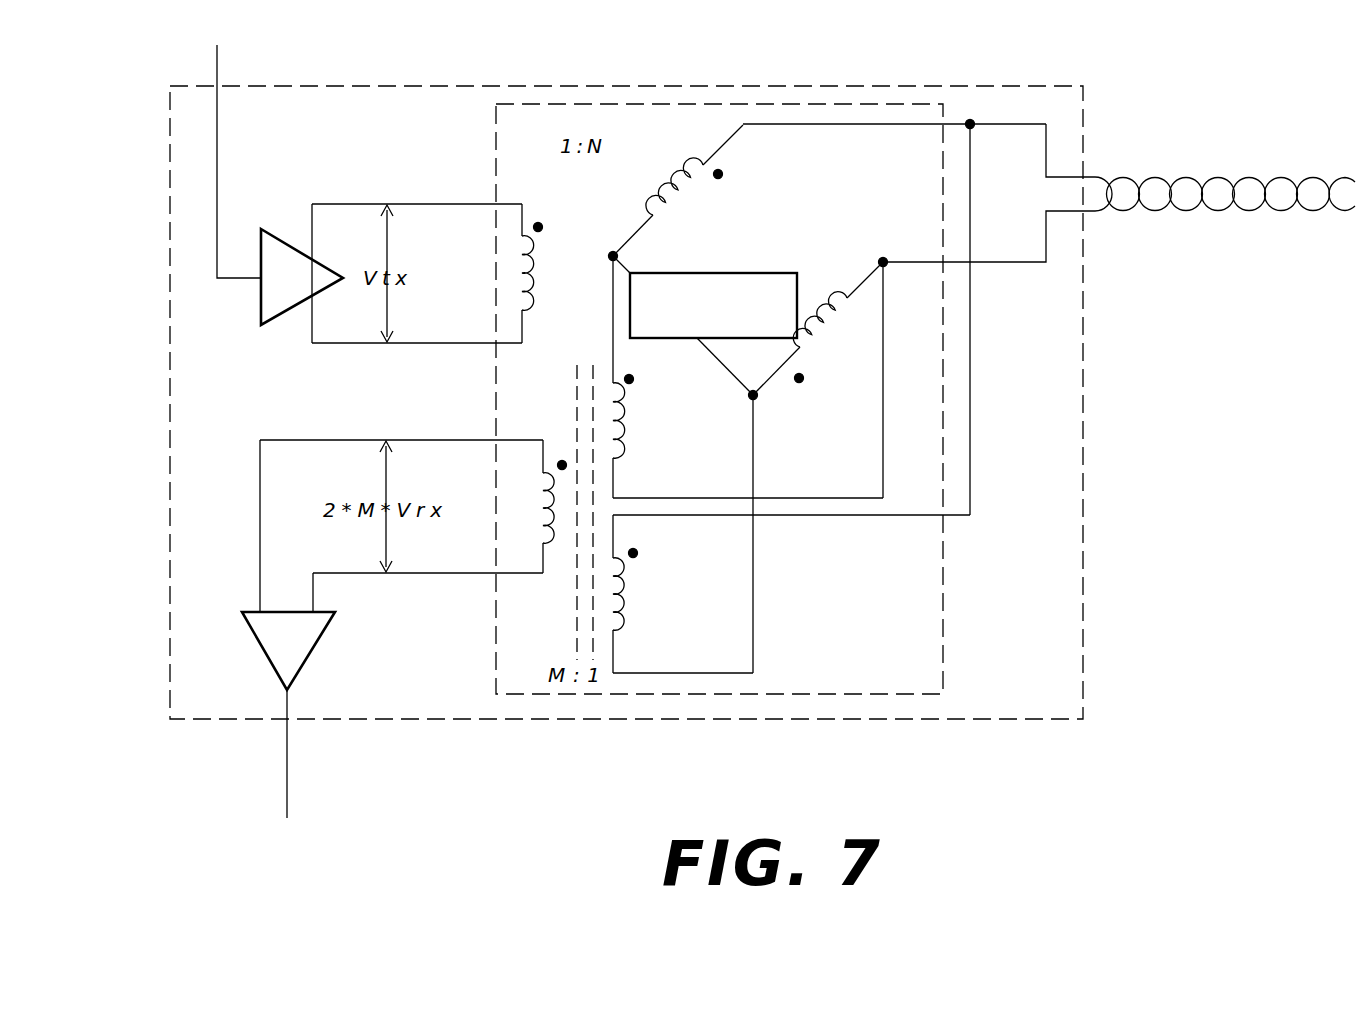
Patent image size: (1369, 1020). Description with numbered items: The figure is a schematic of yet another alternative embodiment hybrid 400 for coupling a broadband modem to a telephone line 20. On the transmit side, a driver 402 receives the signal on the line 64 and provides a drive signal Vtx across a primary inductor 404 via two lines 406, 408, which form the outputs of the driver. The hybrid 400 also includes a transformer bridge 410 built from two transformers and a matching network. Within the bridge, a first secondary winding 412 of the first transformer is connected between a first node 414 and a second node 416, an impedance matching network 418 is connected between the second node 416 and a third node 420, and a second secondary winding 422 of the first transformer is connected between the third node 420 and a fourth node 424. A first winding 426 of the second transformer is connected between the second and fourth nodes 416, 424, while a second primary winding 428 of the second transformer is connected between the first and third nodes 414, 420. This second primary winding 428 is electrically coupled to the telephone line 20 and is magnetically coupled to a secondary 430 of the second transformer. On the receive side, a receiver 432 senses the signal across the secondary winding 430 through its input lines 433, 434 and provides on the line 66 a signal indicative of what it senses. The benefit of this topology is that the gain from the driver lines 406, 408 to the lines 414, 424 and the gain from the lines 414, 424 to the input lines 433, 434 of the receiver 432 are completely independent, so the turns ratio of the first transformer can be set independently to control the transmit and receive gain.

The telephone line 20 is at (1272, 211).
The line 64 is at (217, 58).
The line 66 is at (290, 775).
The hybrid 400 is at (1038, 80).
The driver 402 is at (272, 293).
The primary inductor 404 is at (522, 290).
The line 406 is at (434, 208).
The line 408 is at (432, 343).
The transformer bridge 410 is at (943, 563).
The first secondary winding 412 is at (678, 190).
The first node 414 is at (866, 118).
The second node 416 is at (613, 256).
The impedance matching network 418 is at (700, 273).
The third node 420 is at (756, 398).
The second secondary winding 422 is at (818, 328).
The fourth node 424 is at (883, 260).
The first winding 426 is at (632, 423).
The second primary winding 428 is at (632, 595).
The secondary 430 is at (543, 522).
The receiver 432 is at (300, 645).
The input line 433 is at (340, 440).
The input line 434 is at (340, 573).